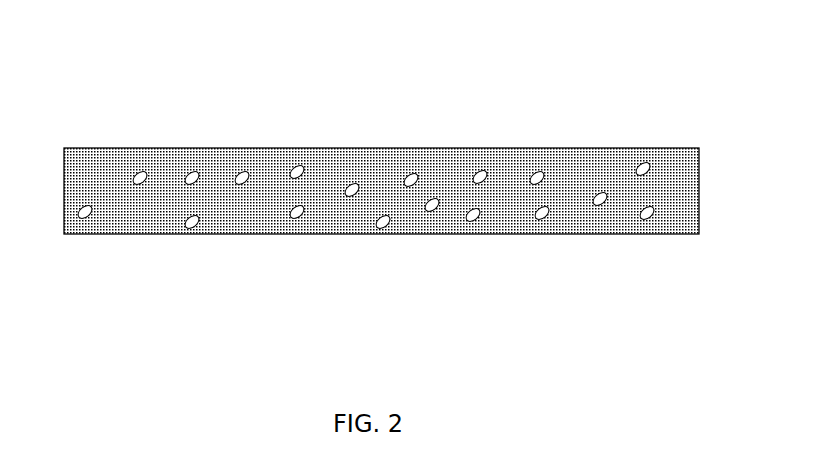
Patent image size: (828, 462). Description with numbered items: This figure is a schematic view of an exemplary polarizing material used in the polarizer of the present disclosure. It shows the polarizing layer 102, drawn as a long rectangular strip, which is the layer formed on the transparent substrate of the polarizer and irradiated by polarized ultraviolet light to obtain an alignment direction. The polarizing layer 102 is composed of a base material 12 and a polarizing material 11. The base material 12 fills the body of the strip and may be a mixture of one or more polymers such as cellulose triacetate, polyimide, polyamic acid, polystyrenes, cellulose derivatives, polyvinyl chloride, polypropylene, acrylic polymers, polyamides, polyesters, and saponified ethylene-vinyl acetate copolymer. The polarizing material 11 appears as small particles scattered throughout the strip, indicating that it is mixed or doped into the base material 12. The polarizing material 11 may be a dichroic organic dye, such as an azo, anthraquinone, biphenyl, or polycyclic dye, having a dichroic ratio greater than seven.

The polarizing layer 102 is at (427, 256).
The polarizing material 11 is at (300, 167).
The base material 12 is at (522, 167).